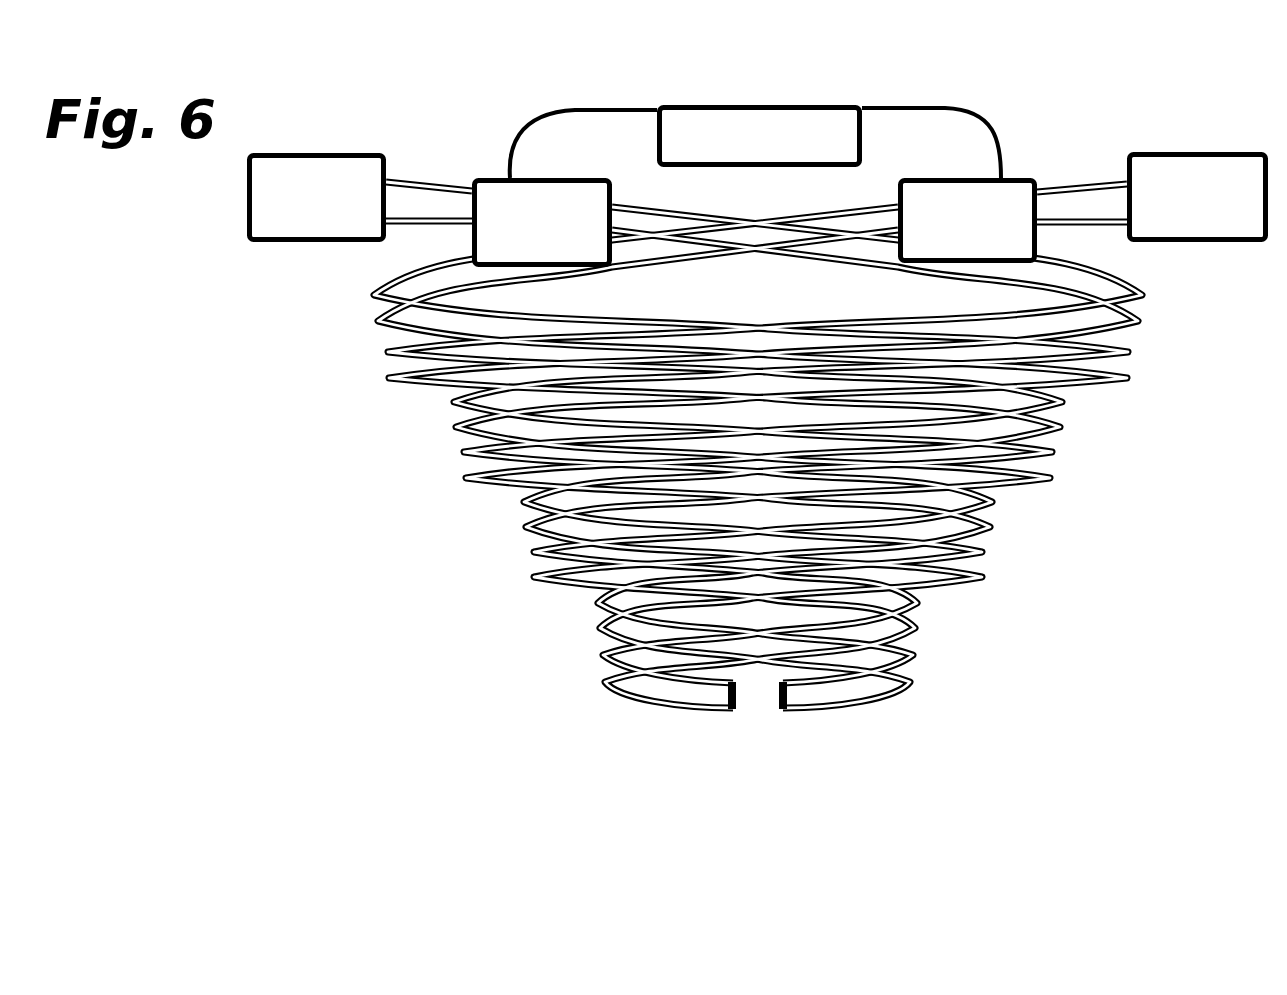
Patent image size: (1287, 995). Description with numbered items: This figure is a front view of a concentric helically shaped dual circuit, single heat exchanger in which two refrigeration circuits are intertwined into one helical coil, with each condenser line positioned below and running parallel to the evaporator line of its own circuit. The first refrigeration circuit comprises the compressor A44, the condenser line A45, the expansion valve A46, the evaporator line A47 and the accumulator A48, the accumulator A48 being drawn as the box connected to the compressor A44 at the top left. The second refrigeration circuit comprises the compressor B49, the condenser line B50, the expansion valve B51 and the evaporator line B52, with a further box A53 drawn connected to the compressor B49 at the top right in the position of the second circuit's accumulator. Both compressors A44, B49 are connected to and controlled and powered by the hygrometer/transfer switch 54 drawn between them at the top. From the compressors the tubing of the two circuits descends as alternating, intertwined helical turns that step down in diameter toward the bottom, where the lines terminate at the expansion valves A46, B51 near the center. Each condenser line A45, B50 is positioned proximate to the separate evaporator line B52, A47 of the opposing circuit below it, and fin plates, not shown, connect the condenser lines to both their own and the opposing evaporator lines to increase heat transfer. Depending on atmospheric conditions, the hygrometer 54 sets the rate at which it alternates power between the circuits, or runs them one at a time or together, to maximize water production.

The compressor A44 is at (542, 223).
The condenser line A45 is at (917, 283).
The expansion valve A46 is at (722, 720).
The evaporator line A47 is at (1150, 296).
The accumulator A48 is at (317, 198).
The compressor B49 is at (968, 221).
The condenser line B50 is at (607, 283).
The expansion valve B51 is at (790, 720).
The evaporator line B52 is at (360, 297).
The control/power unit connected to B49 A53 is at (1198, 197).
The hygrometer/transfer switch 54 is at (760, 136).